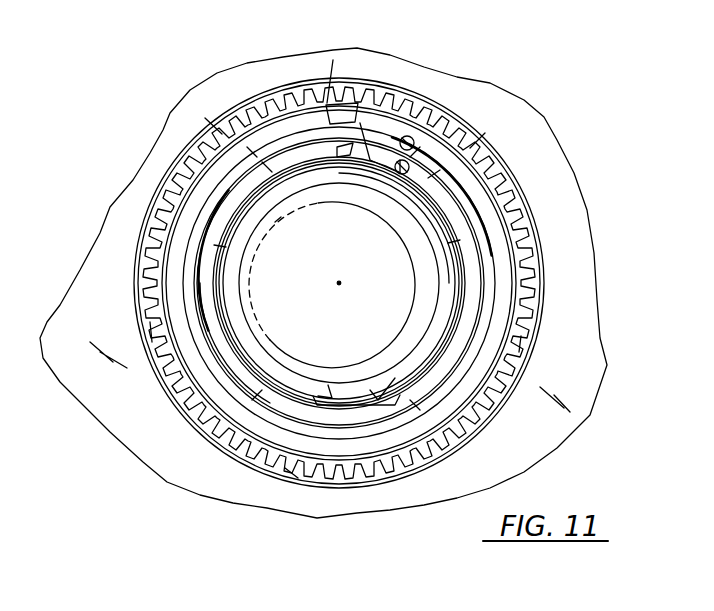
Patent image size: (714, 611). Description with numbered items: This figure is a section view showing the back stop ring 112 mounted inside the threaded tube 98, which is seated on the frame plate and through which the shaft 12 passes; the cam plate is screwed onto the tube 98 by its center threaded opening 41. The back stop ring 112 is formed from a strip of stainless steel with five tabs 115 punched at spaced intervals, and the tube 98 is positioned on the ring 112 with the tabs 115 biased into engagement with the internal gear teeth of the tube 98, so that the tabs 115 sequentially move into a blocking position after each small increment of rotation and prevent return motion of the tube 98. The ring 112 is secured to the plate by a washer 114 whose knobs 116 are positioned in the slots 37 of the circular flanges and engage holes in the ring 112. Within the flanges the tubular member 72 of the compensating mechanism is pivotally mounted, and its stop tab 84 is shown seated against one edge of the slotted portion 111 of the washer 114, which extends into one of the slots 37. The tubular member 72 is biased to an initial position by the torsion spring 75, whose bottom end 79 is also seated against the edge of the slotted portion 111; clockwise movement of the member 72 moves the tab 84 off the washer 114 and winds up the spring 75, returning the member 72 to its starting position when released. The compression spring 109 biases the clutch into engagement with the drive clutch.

The shaft 12 is at (420, 275).
The slots 37 is at (328, 100).
The center threaded opening 41 is at (530, 218).
The tubular member 72 is at (267, 353).
The torsion spring 75 is at (443, 223).
The bottom end of the spring 79 is at (313, 197).
The stop tab 84 is at (367, 387).
The threaded tube 98 is at (532, 245).
The compression spring 109 is at (467, 190).
The slotted portion 111 is at (332, 398).
The back stop ring 112 is at (170, 160).
The washer 114 is at (360, 112).
The tabs 115 is at (213, 125).
The knobs 116 is at (312, 88).